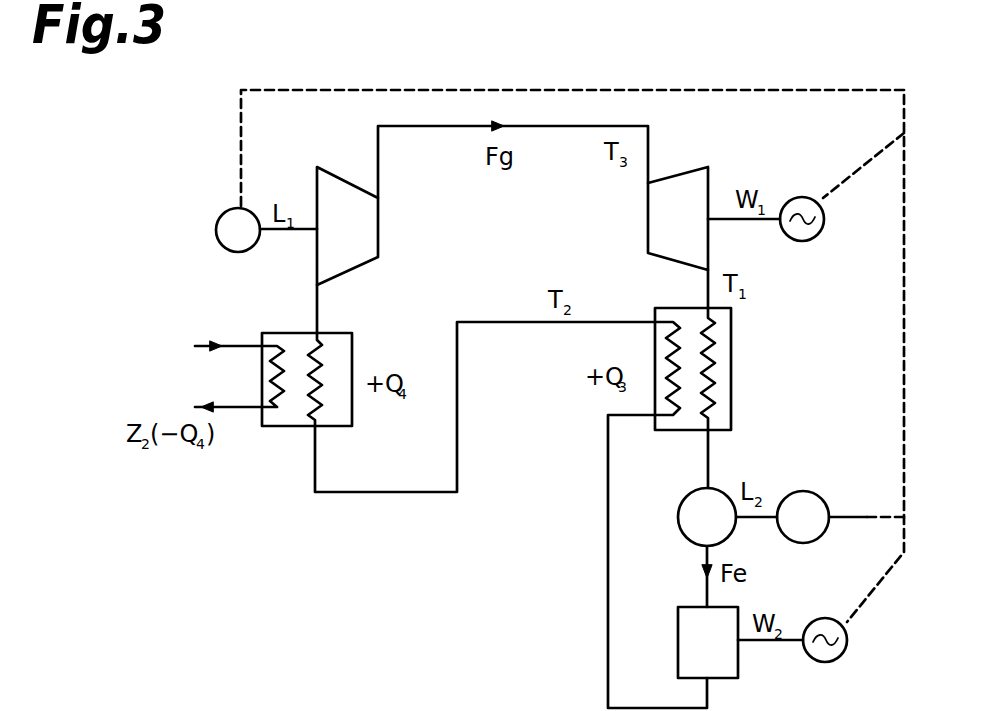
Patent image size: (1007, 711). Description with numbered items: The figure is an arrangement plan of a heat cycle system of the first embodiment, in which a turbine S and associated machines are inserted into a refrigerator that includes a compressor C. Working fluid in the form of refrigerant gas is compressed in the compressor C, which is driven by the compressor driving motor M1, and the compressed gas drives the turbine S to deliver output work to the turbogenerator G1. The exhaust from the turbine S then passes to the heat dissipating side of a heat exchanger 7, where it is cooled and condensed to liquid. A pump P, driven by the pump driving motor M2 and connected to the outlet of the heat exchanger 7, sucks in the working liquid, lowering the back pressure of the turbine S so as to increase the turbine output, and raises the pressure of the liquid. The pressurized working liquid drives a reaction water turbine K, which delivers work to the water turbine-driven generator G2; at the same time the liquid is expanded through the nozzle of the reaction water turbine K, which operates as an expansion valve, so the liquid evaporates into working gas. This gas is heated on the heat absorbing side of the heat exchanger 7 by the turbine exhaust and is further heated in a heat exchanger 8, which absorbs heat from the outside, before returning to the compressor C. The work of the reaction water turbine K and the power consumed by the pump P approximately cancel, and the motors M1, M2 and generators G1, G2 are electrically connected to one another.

The heat exchanger 7 is at (731, 343).
The heat exchanger 8 is at (352, 414).
The compressor C is at (347, 226).
The turbine S is at (678, 218).
The reaction water turbine K is at (708, 642).
The pump P is at (707, 517).
The compressor driving motor M1 is at (238, 230).
The pump driving motor M2 is at (803, 517).
The turbogenerator G1 is at (822, 226).
The water turbine-driven generator G2 is at (844, 640).